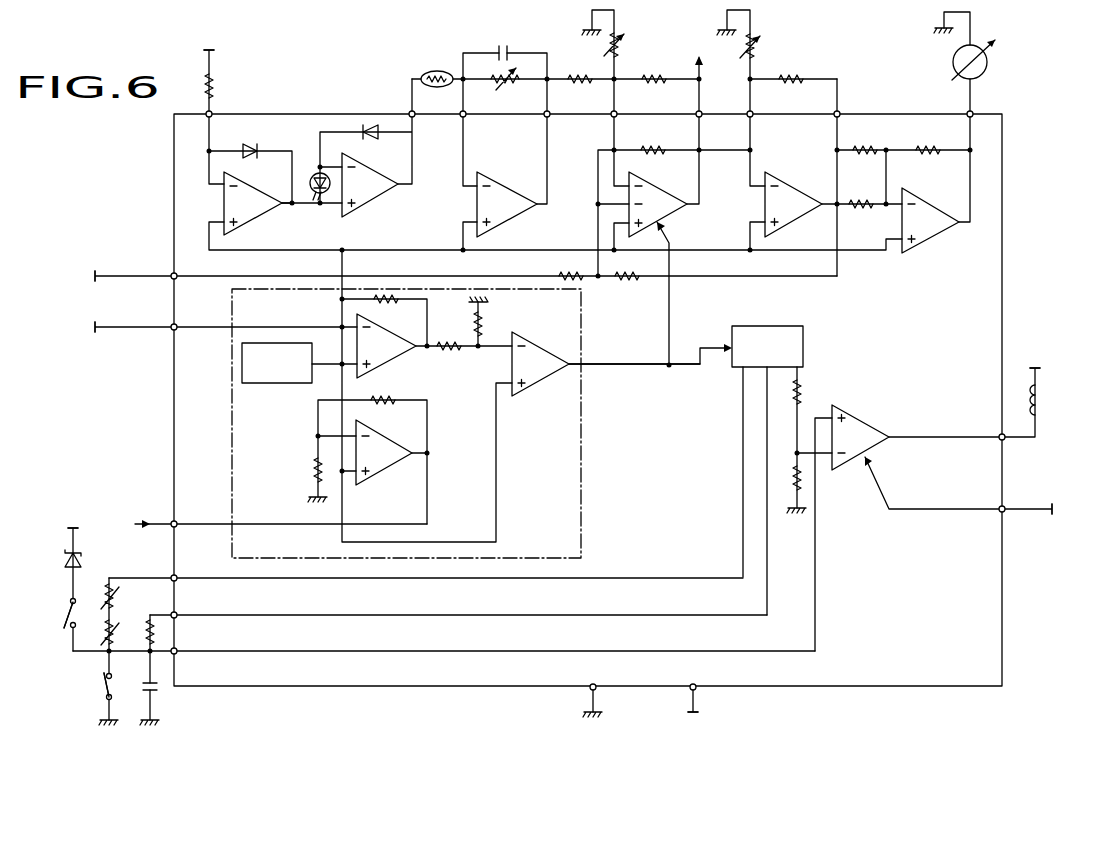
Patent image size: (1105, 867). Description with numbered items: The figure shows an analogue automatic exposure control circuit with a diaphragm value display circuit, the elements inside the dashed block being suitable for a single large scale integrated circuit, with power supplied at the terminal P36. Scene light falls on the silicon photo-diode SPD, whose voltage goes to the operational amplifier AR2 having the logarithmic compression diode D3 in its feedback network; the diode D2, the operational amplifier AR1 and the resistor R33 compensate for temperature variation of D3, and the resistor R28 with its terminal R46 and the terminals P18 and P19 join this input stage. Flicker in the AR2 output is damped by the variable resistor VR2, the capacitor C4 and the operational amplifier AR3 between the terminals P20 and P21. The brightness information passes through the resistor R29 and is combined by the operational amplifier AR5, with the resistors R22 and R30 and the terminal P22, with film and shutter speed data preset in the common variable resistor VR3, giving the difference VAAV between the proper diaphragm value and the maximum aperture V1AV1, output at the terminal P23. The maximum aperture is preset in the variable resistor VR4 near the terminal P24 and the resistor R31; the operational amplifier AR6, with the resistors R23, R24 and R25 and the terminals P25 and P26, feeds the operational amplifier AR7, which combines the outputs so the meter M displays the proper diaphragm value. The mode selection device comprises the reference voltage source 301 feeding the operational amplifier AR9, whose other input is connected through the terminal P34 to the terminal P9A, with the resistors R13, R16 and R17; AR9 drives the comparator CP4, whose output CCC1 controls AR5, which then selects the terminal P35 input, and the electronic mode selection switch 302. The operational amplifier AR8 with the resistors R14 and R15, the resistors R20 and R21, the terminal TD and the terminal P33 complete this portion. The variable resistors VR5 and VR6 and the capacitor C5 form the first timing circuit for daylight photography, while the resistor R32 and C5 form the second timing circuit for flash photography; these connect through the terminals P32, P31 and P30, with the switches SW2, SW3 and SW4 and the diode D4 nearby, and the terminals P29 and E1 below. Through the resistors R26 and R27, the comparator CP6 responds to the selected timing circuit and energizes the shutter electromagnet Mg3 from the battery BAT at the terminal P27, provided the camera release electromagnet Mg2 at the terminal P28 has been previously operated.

The resistor R46 terminal R46 is at (214, 47).
The resistor R28 is at (221, 86).
The terminal P18 is at (219, 124).
The diode D2 is at (248, 144).
The operational amplifier AR1 is at (253, 203).
The silicon photo-diode SPD is at (319, 201).
The operational amplifier AR2 is at (370, 185).
The logarithmic compression diode D3 is at (369, 139).
The terminal P19 is at (422, 124).
The resistor R33 is at (437, 70).
The capacitor C4 is at (505, 45).
The variable resistor VR2 is at (504, 86).
The terminal P20 is at (473, 124).
The terminal P21 is at (557, 124).
The operational amplifier AR3 is at (507, 204).
The resistor R29 is at (580, 90).
The common variable resistor VR3 is at (625, 47).
The terminal P22 is at (624, 124).
The resistor R22 is at (653, 142).
The operational amplifier AR5 is at (658, 204).
The resistor R30 is at (654, 90).
The difference between a proper diaphragm value and a maximum aperture VAAV is at (698, 59).
The terminal P23 is at (709, 124).
The variable resistor VR4 is at (761, 47).
The terminal P24 is at (760, 124).
The resistor R31 is at (791, 90).
The maximum aperture V1AV1 is at (861, 105).
The terminal P25 is at (847, 124).
The operational amplifier AR6 is at (793, 204).
The resistor R23 is at (865, 160).
The resistor R25 is at (928, 160).
The resistor R24 is at (861, 215).
The operational amplifier AR7 is at (930, 220).
The terminal P26 is at (980, 124).
The meter M is at (977, 60).
The terminal TD is at (82, 278).
The terminal P35 is at (184, 269).
The resistor R20 is at (570, 268).
The resistor R21 is at (627, 286).
The terminal P34 is at (184, 319).
The terminal P9A is at (81, 330).
The reference voltage source 301 is at (277, 363).
The resistor R13 is at (386, 309).
The operational amplifier AR9 is at (386, 346).
The resistor R16 is at (449, 338).
The resistor R17 is at (490, 324).
The comparator CP4 is at (540, 364).
The control signal CCC1 is at (634, 356).
The electronic type mode selection switch 302 is at (767, 346).
The resistor R15 is at (383, 392).
The operational amplifier AR8 is at (384, 452).
The resistor R14 is at (307, 470).
The terminal P33 is at (184, 517).
The switch SW2 is at (73, 518).
The diode D4 is at (83, 561).
The switch SW3 is at (60, 614).
The variable resistor VR5 is at (123, 596).
The variable resistor VR6 is at (98, 632).
The resistor R32 is at (138, 633).
The switch SW4 is at (121, 686).
The capacitor C5 is at (157, 696).
The terminal P32 is at (184, 571).
The terminal P31 is at (184, 608).
The terminal P30 is at (184, 644).
The terminal P29 is at (596, 680).
The terminal P36 is at (696, 680).
The power source E1 is at (694, 725).
The resistor R26 is at (809, 392).
The resistor R27 is at (787, 478).
The comparator CP6 is at (860, 437).
The terminal P27 is at (992, 429).
The terminal P28 is at (992, 501).
The battery BAT is at (1032, 359).
The shutter electromagnet Mg3 is at (1020, 400).
The camera release electromagnet Mg2 is at (1067, 513).